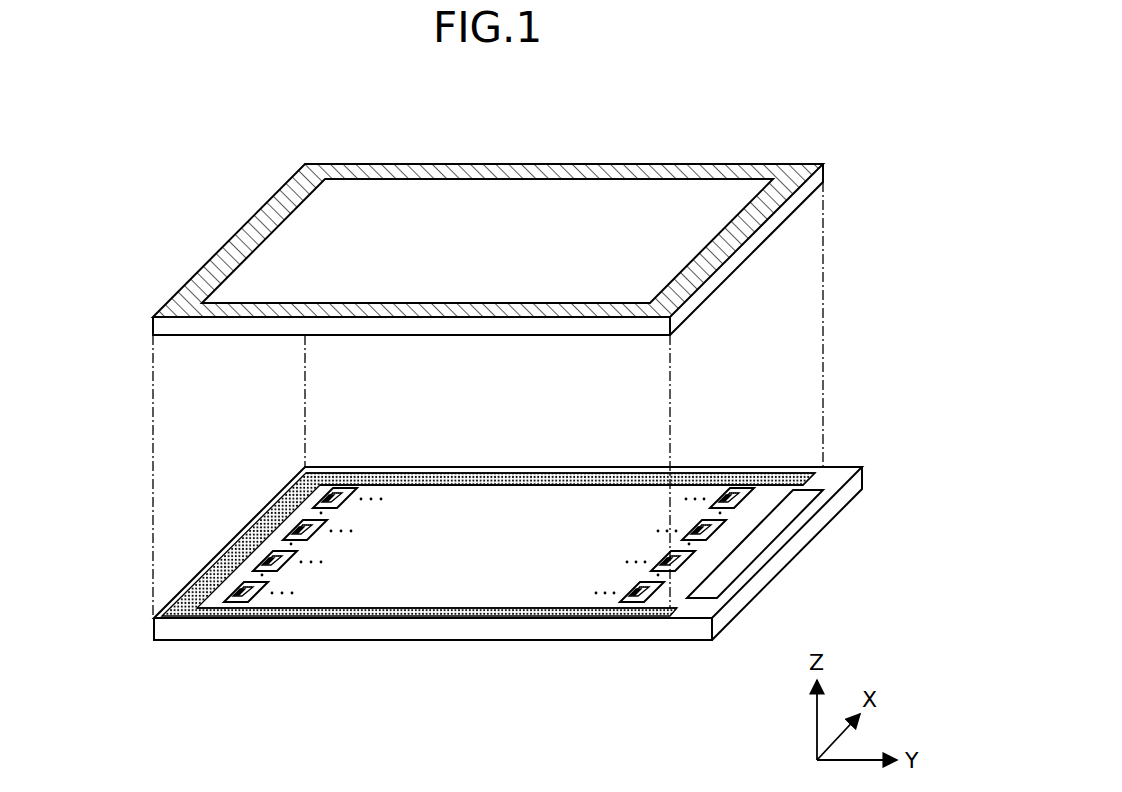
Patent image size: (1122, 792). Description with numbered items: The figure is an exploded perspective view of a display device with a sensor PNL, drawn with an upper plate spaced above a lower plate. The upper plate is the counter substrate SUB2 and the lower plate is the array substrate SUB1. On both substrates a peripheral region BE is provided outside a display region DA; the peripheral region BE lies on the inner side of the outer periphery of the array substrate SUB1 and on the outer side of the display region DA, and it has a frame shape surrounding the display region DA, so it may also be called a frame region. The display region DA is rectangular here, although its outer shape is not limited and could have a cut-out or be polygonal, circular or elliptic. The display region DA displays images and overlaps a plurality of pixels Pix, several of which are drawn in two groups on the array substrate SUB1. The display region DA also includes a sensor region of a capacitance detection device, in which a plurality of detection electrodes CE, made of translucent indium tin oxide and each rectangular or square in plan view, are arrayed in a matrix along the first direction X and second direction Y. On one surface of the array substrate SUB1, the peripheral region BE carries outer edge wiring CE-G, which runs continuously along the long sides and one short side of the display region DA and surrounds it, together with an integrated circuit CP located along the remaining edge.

The display device with a sensor PNL is at (779, 128).
The counter substrate SUB2 is at (264, 201).
The array substrate SUB1 is at (198, 575).
The peripheral region BE is at (217, 275).
The display region DA is at (433, 238).
The outer edge wiring CE-G is at (435, 482).
The detection electrode CE is at (337, 495).
The pixel Pix is at (302, 490).
The integrated circuit CP is at (755, 545).